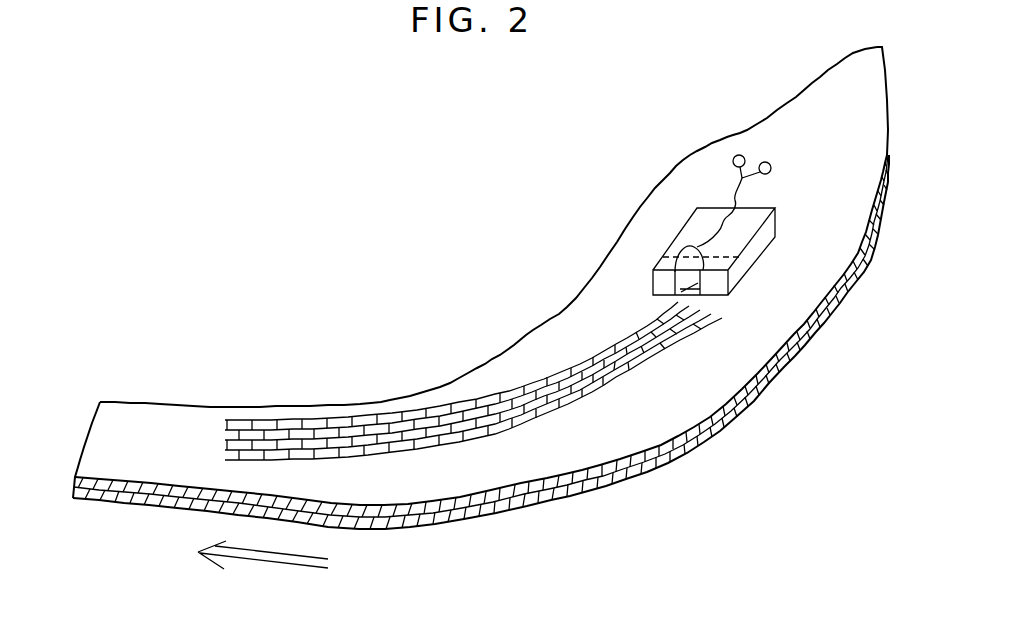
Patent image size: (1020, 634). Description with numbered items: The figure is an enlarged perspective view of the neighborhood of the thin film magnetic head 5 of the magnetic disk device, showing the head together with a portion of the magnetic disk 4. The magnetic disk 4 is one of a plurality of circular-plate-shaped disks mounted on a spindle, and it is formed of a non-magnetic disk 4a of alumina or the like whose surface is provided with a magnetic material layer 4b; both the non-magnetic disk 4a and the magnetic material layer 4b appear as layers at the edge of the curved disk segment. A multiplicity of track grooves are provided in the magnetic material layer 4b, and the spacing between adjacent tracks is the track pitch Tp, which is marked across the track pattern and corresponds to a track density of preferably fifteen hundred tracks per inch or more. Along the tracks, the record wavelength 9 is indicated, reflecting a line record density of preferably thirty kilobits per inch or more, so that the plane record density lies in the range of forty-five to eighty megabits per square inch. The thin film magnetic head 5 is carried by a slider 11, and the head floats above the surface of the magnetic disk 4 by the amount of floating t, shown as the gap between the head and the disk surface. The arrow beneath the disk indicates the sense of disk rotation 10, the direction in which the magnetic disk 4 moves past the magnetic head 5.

The magnetic disk 4 is at (667, 452).
The non-magnetic disk 4a is at (410, 528).
The magnetic material layer 4b is at (128, 510).
The thin film magnetic head 5 is at (654, 271).
The record wavelength 9 is at (377, 387).
The sense of disk rotation 10 is at (265, 566).
The slider 11 is at (697, 208).
The amount of floating of the magnetic head t is at (738, 297).
The track pitch Tp is at (198, 440).